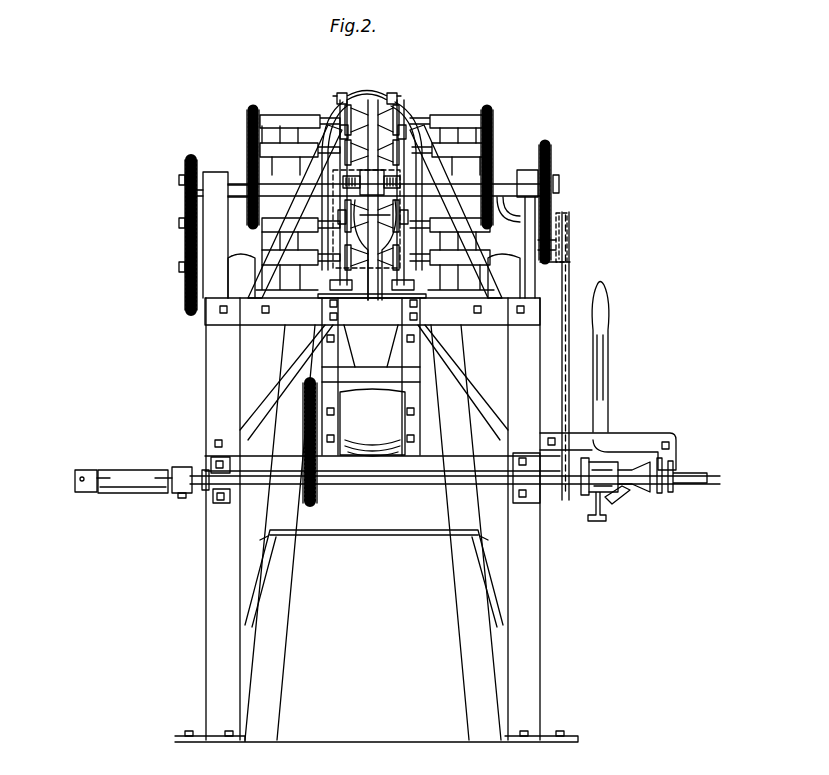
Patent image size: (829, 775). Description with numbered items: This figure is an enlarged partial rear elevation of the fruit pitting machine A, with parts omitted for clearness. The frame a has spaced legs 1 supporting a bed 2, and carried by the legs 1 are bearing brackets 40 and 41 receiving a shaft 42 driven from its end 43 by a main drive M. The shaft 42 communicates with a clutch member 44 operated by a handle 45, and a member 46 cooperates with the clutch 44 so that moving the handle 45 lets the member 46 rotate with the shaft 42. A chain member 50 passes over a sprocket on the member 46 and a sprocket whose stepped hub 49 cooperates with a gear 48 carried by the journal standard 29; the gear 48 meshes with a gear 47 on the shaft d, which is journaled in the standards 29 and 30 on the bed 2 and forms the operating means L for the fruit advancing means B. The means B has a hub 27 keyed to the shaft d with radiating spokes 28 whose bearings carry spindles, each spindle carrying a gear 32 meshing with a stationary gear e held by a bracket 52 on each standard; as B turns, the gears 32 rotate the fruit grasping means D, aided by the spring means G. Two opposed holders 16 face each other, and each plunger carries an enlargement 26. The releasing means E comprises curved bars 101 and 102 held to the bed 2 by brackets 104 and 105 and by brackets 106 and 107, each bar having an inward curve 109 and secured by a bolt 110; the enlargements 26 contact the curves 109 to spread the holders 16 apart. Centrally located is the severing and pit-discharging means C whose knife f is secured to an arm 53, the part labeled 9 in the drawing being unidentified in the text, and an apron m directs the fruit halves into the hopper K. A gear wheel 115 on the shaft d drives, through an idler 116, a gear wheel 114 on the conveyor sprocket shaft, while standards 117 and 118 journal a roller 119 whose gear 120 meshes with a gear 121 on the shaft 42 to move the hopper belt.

The legs 1 is at (225, 670).
The bed 2 is at (290, 310).
The pitman 9 is at (377, 202).
The cup or holder 16 is at (372, 199).
The enlargement or collar 26 is at (248, 140).
The hub 27 is at (548, 160).
The spokes 28 is at (534, 92).
The journal standard 29 is at (560, 200).
The journal standard 30 is at (215, 212).
The gear 32 is at (248, 122).
The bearing bracket 40 is at (218, 486).
The bearing bracket 41 is at (548, 520).
The shaft 42 is at (398, 528).
The shaft end 43 is at (76, 494).
The clutch member 44 is at (625, 493).
The handle 45 is at (606, 398).
The member 46 is at (585, 495).
The gear 47 is at (552, 160).
The gear 48 is at (575, 252).
The sprocket hub 49 is at (568, 220).
The chain member 50 is at (600, 273).
The brackets 52 is at (240, 215).
The arm 53 is at (360, 212).
The bar 101 is at (328, 130).
The bar 102 is at (416, 118).
The bracket 104 is at (420, 282).
The bracket 105 is at (322, 282).
The bracket 106 is at (452, 112).
The bracket 107 is at (300, 120).
The inward curve 109 is at (370, 98).
The bolt 110 is at (338, 98).
The gear wheel 114 is at (186, 268).
The gear wheel 115 is at (188, 172).
The idler 116 is at (186, 240).
The standard 117 is at (420, 343).
The standard 118 is at (290, 363).
The roller 119 is at (390, 405).
The gear 120 is at (305, 388).
The gear 121 is at (316, 498).
The fruit pitting machine A is at (85, 352).
The fruit advancing means B is at (520, 140).
The fruit severing and pit-discharging means C is at (352, 134).
The fruit grasping means D is at (373, 235).
The releasing means E is at (382, 219).
The means for imparting axial movement G is at (365, 167).
The hopper K is at (382, 447).
The operating means L is at (547, 183).
The main drive M is at (133, 491).
The frame or standard a is at (222, 582).
The shaft d is at (203, 175).
The stationary gear wheels e is at (248, 165).
The knife f is at (425, 118).
The apron m is at (400, 208).